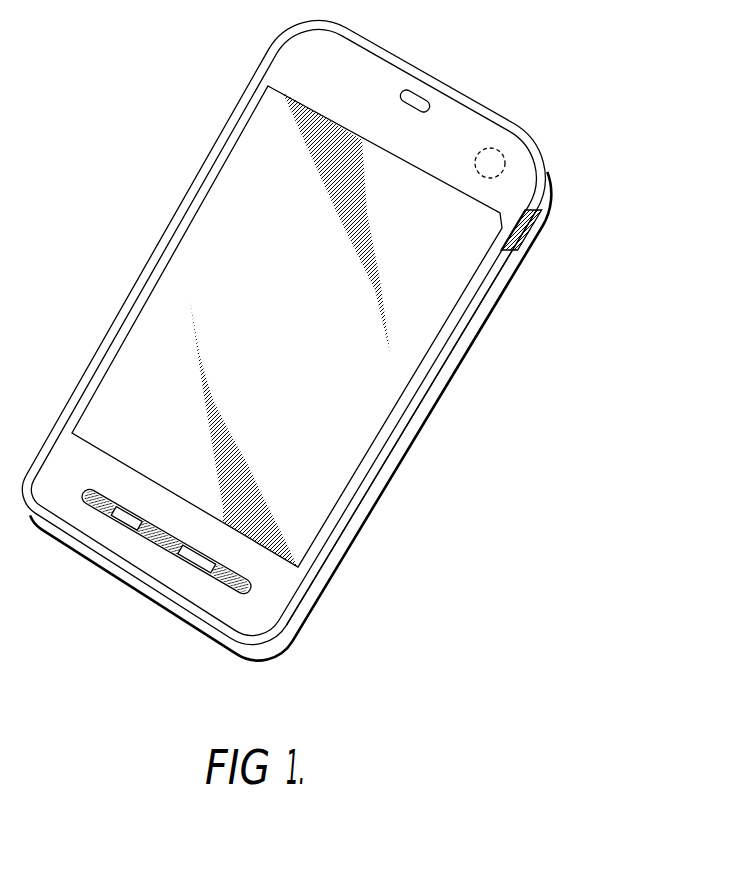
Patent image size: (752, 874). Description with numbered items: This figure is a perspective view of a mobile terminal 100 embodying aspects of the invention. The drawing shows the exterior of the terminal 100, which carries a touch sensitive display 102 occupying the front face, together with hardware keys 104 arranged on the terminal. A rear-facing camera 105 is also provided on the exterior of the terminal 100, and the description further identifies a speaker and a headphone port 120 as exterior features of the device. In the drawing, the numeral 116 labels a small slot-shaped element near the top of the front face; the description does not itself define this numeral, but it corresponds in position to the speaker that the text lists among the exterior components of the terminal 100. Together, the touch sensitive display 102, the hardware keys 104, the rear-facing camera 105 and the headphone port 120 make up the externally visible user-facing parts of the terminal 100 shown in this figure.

The terminal 100 is at (118, 143).
The touch sensitive display 102 is at (287, 326).
The hardware keys 104 is at (121, 628).
The rear-facing camera 105 is at (505, 152).
The speaker 116 is at (418, 88).
The headphone port 120 is at (444, 422).